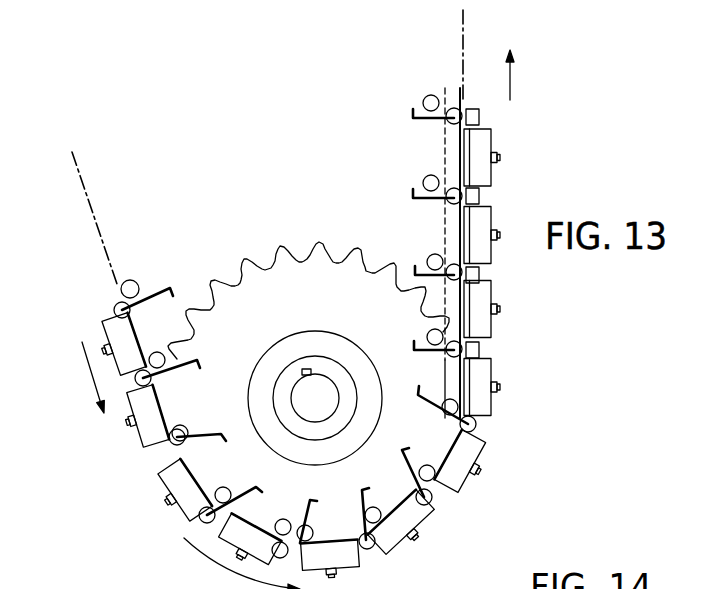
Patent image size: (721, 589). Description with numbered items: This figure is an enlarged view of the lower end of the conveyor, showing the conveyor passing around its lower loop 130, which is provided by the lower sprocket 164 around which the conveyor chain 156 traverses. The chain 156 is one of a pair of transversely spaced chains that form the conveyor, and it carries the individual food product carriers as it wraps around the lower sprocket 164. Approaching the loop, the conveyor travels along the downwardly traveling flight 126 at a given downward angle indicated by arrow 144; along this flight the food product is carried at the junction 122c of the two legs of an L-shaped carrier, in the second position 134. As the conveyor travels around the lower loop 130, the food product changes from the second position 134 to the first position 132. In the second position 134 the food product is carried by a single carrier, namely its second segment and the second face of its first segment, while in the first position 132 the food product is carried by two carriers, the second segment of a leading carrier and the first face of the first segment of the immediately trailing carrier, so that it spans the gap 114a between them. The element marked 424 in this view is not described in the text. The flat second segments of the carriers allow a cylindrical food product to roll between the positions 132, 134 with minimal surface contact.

The lower loop 130 is at (308, 335).
The lower sprocket 164 is at (253, 262).
The first position 132 is at (367, 501).
The second position 134 is at (284, 517).
The gap 114a is at (363, 545).
The junction 122c is at (170, 427).
The downwardly traveling flight 126 is at (100, 322).
The arrow 144 is at (95, 378).
The chain 156 is at (483, 370).
The direction of chain travel 424 is at (487, 127).